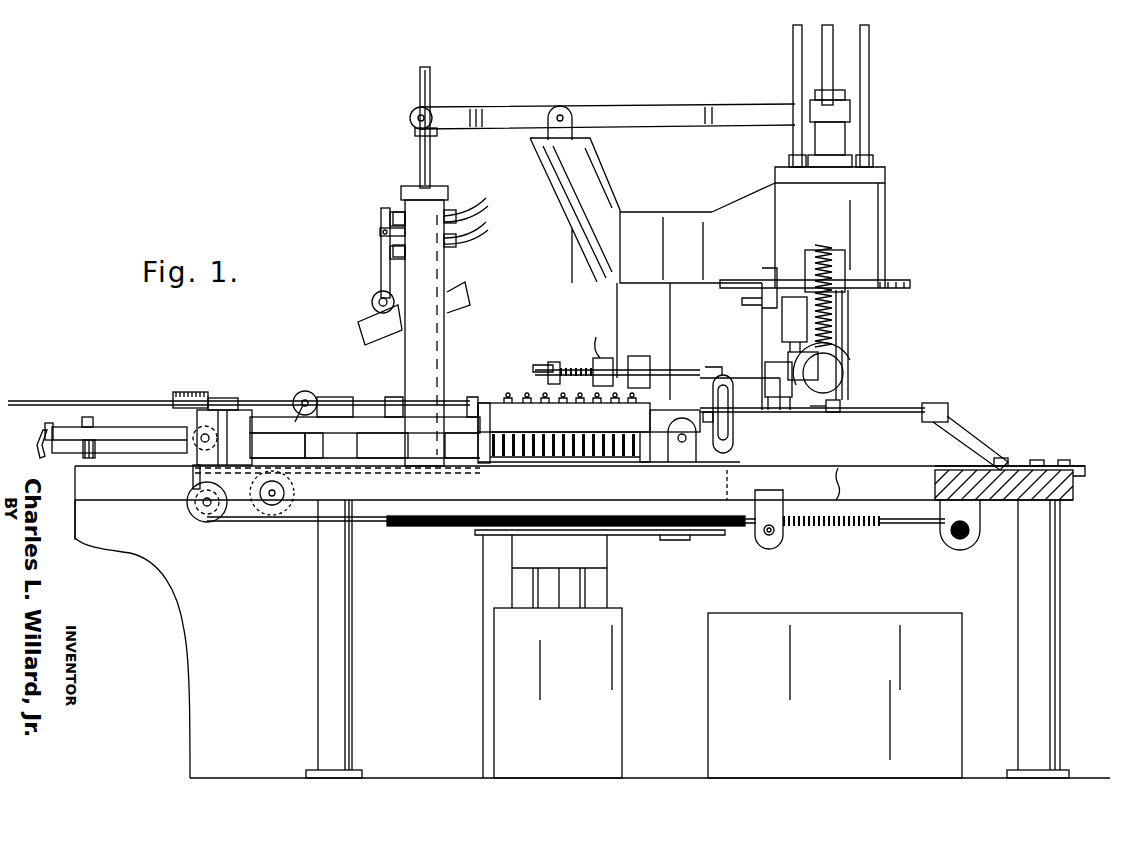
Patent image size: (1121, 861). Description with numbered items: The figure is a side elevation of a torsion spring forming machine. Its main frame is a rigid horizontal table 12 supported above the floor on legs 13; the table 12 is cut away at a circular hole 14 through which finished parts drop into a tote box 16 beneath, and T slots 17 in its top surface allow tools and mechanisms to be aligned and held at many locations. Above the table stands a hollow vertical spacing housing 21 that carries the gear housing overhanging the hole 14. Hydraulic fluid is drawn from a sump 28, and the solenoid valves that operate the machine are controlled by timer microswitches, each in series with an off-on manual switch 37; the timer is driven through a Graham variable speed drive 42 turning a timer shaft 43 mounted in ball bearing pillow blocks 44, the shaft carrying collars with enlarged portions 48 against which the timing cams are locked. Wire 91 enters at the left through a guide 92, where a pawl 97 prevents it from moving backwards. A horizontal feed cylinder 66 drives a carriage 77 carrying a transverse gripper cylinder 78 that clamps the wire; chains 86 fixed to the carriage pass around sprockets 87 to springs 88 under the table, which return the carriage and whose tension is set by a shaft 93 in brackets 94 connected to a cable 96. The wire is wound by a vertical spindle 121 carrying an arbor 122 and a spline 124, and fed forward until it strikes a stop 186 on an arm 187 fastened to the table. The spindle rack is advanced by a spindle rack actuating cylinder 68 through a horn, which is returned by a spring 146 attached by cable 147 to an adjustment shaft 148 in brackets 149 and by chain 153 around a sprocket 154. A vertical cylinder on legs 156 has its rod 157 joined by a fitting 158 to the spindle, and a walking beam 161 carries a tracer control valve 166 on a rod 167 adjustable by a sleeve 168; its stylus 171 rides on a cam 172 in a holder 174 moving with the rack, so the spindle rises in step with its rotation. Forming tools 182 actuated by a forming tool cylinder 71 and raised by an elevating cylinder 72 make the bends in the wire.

The table 12 is at (1070, 483).
The legs 13 is at (350, 683).
The circular hole 14 is at (913, 480).
The tote box 16 is at (947, 703).
The T slots 17 is at (1001, 465).
The spacing housing 21 is at (633, 311).
The sump 28 is at (610, 700).
The off-on manual switch 37 is at (527, 395).
The Graham variable speed drive 42 is at (735, 422).
The timer shaft 43 is at (660, 452).
The ball bearing pillow blocks 44 is at (492, 455).
The enlarged portions 48 is at (552, 455).
The feed cylinder 66 is at (63, 433).
The spindle rack actuating cylinder 68 is at (382, 440).
The forming tool cylinder 71 is at (833, 377).
The forming tool elevating cylinder 72 is at (790, 319).
The carriage 77 is at (320, 397).
The gripper cylinder 78 is at (302, 396).
The chains 86 is at (190, 475).
The sprockets 87 is at (198, 513).
The springs 88 is at (429, 527).
The wire 91 is at (56, 400).
The guide 92 is at (200, 392).
The shaft 93 is at (770, 537).
The brackets 94 is at (782, 527).
The cable 96 is at (745, 527).
The pawl 97 is at (232, 398).
The spindle 121 is at (845, 358).
The arbor 122 is at (868, 228).
The spline 124 is at (842, 323).
The spring 146 is at (843, 528).
The cable 147 is at (912, 525).
The adjustment shaft 148 is at (963, 542).
The brackets 149 is at (972, 517).
The chain 153 is at (250, 510).
The sprocket 154 is at (273, 507).
The legs 156 is at (797, 72).
The rod 157 is at (833, 53).
The fitting 158 is at (850, 120).
The walking beam 161 is at (657, 106).
The tracer control valve 166 is at (455, 227).
The rod 167 is at (423, 157).
The sleeve 168 is at (416, 106).
The stylus 171 is at (380, 267).
The cam 172 is at (370, 325).
The holder 174 is at (402, 378).
The forming tool 182 is at (795, 362).
The stop 186 is at (938, 403).
The arm 187 is at (977, 433).